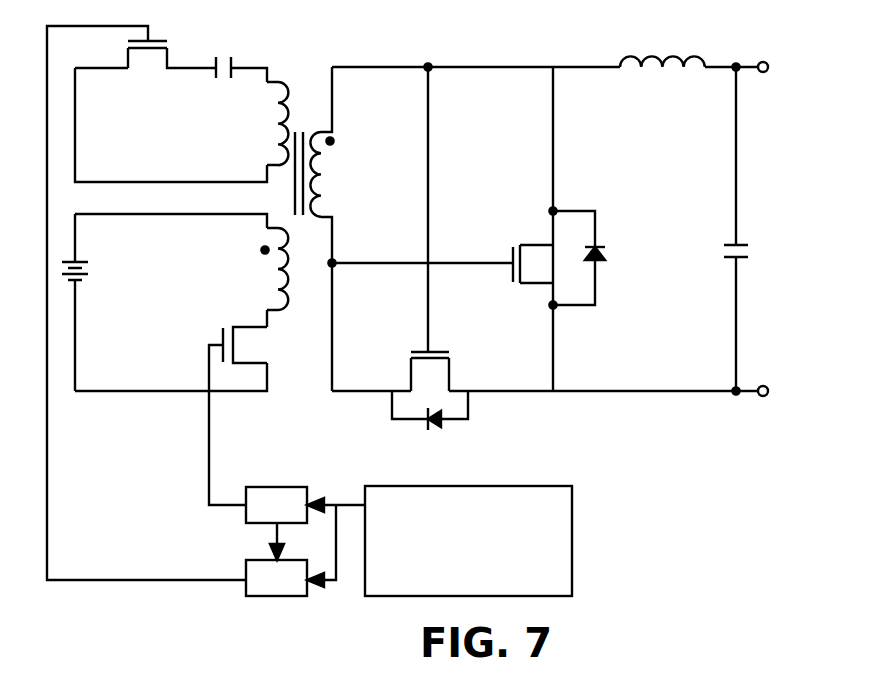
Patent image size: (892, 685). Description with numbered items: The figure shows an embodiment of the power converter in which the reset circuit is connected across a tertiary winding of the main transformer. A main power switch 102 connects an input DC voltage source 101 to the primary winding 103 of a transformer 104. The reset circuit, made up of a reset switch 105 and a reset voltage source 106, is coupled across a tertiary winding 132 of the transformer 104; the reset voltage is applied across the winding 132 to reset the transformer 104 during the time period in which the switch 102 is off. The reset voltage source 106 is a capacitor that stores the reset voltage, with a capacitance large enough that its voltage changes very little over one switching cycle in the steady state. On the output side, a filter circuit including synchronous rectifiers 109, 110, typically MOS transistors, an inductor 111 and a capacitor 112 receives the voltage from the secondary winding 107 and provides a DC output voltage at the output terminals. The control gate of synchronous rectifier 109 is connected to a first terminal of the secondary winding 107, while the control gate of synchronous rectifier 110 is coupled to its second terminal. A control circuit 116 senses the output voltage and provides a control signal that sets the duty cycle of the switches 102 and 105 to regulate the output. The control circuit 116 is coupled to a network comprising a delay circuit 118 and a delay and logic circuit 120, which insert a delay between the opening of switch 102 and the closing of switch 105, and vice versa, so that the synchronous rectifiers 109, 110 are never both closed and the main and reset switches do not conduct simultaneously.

The input DC voltage source 101 is at (79, 262).
The main power switch 102 is at (263, 343).
The primary winding 103 is at (262, 278).
The transformer 104 is at (300, 130).
The reset switch 105 is at (145, 63).
The reset voltage source 106 is at (231, 64).
The secondary winding 107 is at (331, 170).
The synchronous rectifier 109 is at (423, 352).
The synchronous rectifier 110 is at (533, 283).
The inductor 111 is at (673, 68).
The capacitor 112 is at (742, 258).
The control circuit 116 is at (470, 486).
The delay circuit 118 is at (277, 487).
The delay and logic circuit 120 is at (266, 597).
The tertiary winding 132 is at (272, 116).